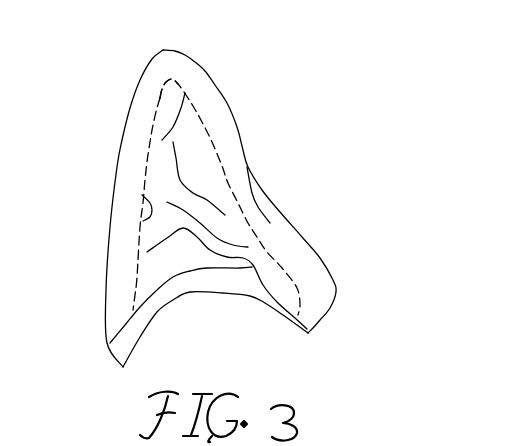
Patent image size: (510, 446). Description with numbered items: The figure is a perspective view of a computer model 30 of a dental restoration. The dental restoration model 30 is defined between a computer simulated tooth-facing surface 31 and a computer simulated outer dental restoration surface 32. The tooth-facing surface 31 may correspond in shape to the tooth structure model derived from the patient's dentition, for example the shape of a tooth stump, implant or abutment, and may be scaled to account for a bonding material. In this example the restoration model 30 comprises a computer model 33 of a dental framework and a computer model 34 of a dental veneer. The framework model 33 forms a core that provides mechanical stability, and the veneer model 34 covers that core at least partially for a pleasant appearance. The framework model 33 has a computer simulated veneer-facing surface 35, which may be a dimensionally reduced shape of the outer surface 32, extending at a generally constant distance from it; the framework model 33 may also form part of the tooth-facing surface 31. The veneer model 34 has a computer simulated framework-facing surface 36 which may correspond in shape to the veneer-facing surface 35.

The computer model of the dental restoration 30 is at (318, 80).
The computer simulated tooth-facing surface 31 is at (207, 297).
The computer simulated outer dental restoration surface 32 is at (124, 140).
The computer model of a dental framework 33 is at (225, 221).
The computer model of a dental veneer 34 is at (238, 172).
The computer simulated veneer-facing surface 35 is at (160, 98).
The computer simulated framework-facing surface 36 is at (142, 222).